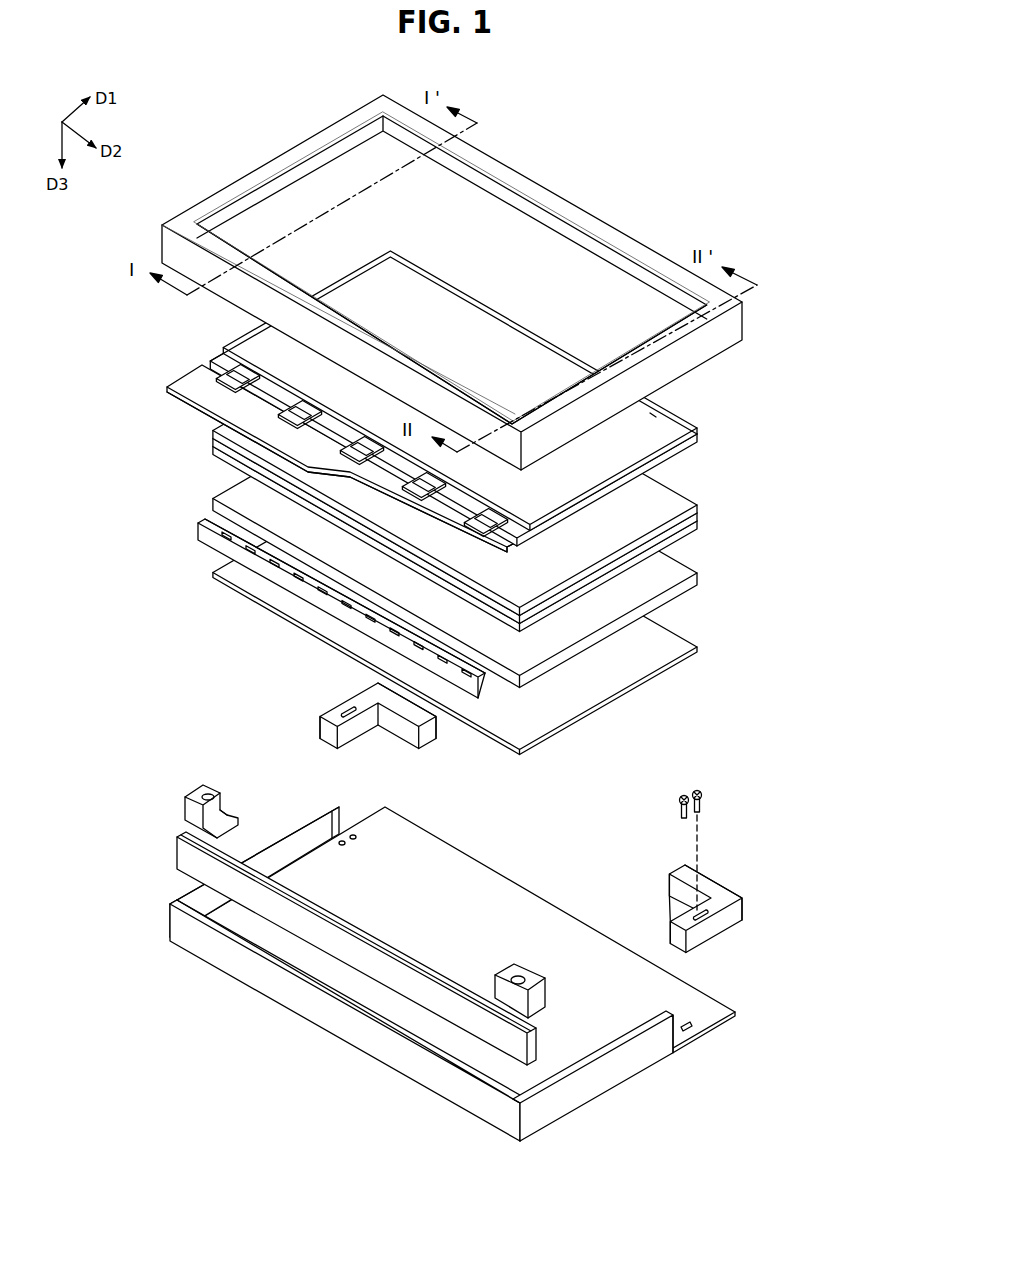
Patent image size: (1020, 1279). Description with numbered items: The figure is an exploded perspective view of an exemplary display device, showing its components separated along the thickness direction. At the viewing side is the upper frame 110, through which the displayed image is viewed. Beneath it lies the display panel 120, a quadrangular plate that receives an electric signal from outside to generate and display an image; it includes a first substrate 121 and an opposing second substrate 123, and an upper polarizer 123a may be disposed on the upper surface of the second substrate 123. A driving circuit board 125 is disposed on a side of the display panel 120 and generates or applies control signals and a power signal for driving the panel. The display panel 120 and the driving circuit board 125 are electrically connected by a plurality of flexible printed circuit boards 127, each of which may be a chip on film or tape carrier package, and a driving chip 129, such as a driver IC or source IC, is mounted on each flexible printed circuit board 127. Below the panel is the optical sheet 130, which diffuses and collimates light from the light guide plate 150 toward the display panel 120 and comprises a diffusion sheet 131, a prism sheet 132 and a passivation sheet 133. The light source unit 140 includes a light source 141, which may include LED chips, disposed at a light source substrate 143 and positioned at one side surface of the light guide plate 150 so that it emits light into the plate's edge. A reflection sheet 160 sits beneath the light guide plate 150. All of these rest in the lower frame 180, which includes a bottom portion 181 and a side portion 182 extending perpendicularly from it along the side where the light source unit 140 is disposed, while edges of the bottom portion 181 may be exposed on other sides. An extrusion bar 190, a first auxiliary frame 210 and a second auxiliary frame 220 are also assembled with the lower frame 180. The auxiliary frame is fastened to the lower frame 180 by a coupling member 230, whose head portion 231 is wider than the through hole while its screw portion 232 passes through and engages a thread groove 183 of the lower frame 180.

The upper frame 110 is at (736, 328).
The display panel 120 is at (512, 398).
The first substrate 121 is at (688, 450).
The second substrate 123 is at (485, 391).
The upper polarizer 123a is at (653, 415).
The driving circuit board 125 is at (221, 395).
The flexible printed circuit board 127 is at (324, 429).
The driving chip 129 is at (237, 373).
The optical sheet 130 is at (513, 480).
The diffusion sheet 131 is at (693, 530).
The prism sheet 132 is at (693, 517).
The passivation sheet 133 is at (693, 503).
The light source unit 140 is at (286, 603).
The light source 141 is at (213, 519).
The light source substrate 143 is at (216, 542).
The light guide plate 150 is at (675, 572).
The reflection sheet 160 is at (670, 637).
The lower frame 180 is at (508, 974).
The bottom portion 181 is at (653, 996).
The side portion 182 is at (632, 1060).
The thread groove 183 is at (690, 1028).
The extrusion bar 190 is at (187, 857).
The first auxiliary frame 210 is at (200, 793).
The second auxiliary frame 220 is at (362, 698).
The coupling member 230 is at (752, 842).
The head portion 231 is at (701, 793).
The screw portion 232 is at (700, 808).